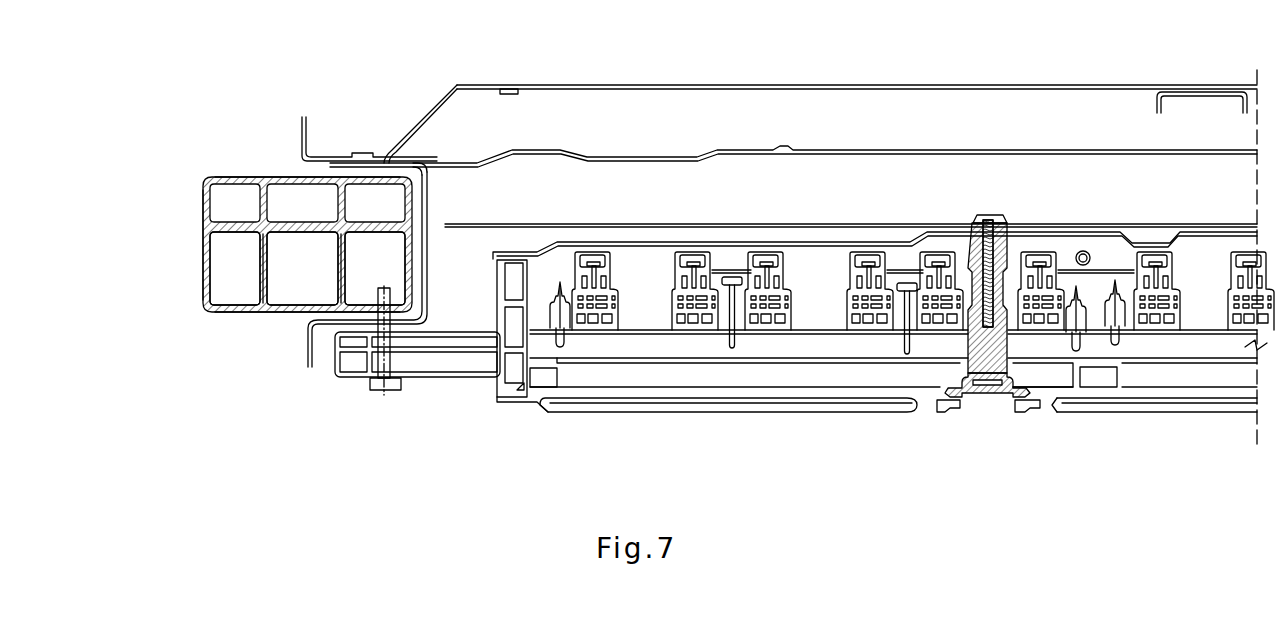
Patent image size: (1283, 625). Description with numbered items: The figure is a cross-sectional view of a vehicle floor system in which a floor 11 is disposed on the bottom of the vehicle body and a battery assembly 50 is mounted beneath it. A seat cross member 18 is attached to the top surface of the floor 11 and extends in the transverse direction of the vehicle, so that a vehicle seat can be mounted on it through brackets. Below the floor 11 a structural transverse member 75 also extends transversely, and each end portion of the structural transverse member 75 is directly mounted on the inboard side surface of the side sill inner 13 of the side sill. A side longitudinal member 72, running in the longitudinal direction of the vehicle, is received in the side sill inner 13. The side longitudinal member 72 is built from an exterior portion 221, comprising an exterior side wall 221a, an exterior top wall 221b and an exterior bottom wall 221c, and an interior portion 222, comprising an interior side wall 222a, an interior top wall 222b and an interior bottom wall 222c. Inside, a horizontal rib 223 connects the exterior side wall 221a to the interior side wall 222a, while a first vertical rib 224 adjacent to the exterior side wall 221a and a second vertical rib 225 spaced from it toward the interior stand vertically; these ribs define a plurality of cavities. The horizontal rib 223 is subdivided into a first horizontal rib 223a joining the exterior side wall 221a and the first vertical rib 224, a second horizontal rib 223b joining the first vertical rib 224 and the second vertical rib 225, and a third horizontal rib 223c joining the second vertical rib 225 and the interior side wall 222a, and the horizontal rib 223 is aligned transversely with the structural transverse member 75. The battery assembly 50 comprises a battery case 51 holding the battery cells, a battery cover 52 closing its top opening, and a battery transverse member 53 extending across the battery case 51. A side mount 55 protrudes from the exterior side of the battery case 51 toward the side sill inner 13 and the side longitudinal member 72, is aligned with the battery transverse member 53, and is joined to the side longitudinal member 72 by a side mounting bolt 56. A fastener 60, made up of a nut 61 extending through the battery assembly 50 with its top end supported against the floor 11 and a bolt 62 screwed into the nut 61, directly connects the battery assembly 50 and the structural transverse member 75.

The floor 11 is at (895, 153).
The side sill inner 13 is at (318, 159).
The seat cross member 18 is at (816, 85).
The battery assembly 50 is at (838, 420).
The battery case 51 is at (648, 412).
The battery cover 52 is at (632, 242).
The battery transverse member 53 is at (799, 328).
The side mount 55 is at (450, 377).
The side mounting bolt 56 is at (385, 396).
The fastener 60 is at (960, 343).
The nut 61 is at (1010, 345).
The bolt 62 is at (988, 216).
The side longitudinal member 72 is at (165, 243).
The structural transverse member 75 is at (797, 242).
The exterior portion 221 is at (202, 206).
The exterior side wall 221a is at (207, 262).
The exterior top wall 221b is at (240, 177).
The exterior bottom wall 221c is at (221, 313).
The interior portion 222 is at (411, 214).
The interior side wall 222a is at (410, 287).
The interior top wall 222b is at (393, 180).
The interior bottom wall 222c is at (362, 318).
The horizontal rib 223 is at (280, 223).
The first horizontal rib 223a is at (236, 232).
The second horizontal rib 223b is at (308, 232).
The third horizontal rib 223c is at (370, 232).
The first vertical rib 224 is at (261, 290).
The second vertical rib 225 is at (336, 290).